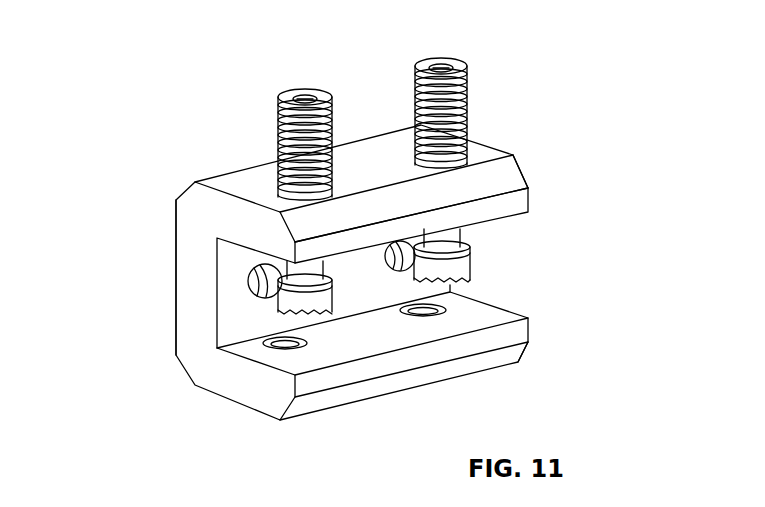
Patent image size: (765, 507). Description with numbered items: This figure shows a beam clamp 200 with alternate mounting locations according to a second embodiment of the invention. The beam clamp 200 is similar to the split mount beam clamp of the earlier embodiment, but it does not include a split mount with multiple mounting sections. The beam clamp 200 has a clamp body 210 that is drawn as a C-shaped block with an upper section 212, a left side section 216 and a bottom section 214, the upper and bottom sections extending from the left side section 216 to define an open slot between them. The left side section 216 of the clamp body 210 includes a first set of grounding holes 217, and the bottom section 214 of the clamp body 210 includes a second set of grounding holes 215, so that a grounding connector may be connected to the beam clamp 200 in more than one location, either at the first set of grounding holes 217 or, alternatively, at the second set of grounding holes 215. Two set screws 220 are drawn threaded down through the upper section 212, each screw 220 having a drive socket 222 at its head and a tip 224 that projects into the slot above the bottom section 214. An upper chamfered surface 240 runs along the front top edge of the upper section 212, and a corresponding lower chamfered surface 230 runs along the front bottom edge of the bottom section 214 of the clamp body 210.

The beam clamp 200 is at (173, 124).
The clamp body 210 is at (190, 181).
The upper arm 212 is at (238, 192).
The bottom section 214 is at (240, 404).
The second set of grounding holes 215 is at (266, 346).
The left side section 216 is at (176, 257).
The first set of grounding holes 217 is at (258, 284).
The set screws 220 is at (323, 103).
The drive socket 222 is at (298, 91).
The screw tip / nut 224 is at (302, 318).
The lower chamfer surface 230 is at (528, 343).
The upper chamfer surface 240 is at (523, 170).